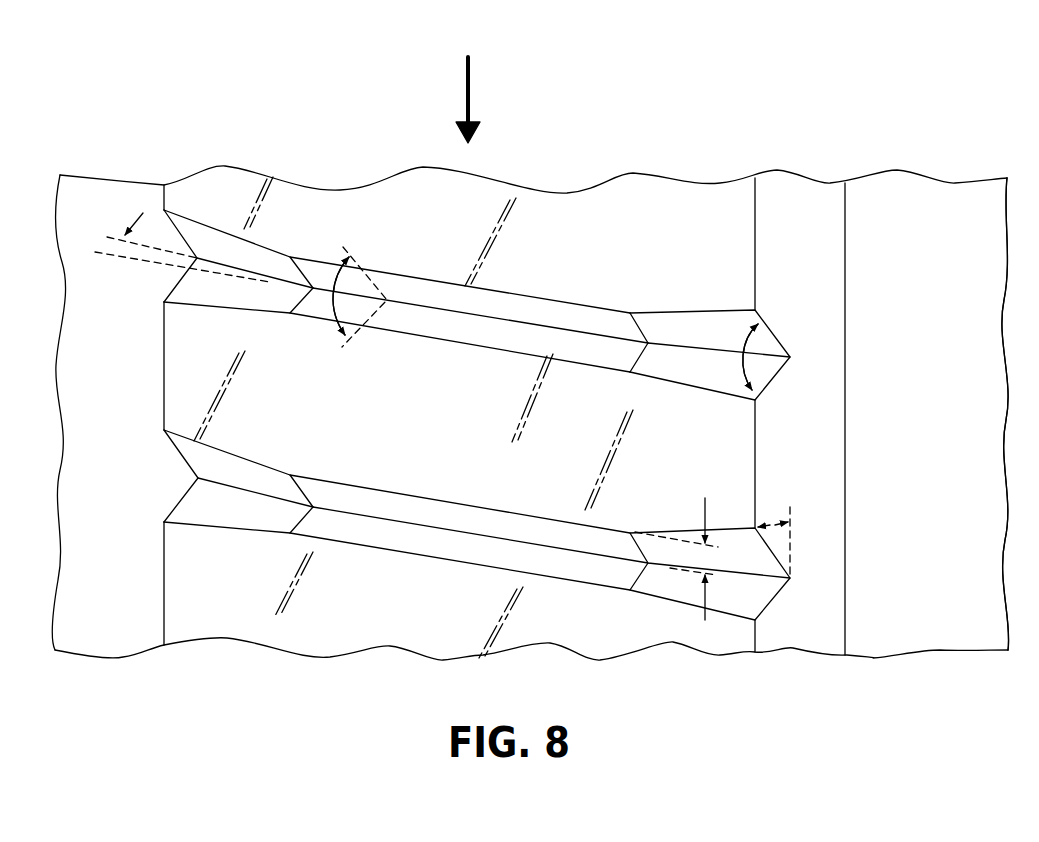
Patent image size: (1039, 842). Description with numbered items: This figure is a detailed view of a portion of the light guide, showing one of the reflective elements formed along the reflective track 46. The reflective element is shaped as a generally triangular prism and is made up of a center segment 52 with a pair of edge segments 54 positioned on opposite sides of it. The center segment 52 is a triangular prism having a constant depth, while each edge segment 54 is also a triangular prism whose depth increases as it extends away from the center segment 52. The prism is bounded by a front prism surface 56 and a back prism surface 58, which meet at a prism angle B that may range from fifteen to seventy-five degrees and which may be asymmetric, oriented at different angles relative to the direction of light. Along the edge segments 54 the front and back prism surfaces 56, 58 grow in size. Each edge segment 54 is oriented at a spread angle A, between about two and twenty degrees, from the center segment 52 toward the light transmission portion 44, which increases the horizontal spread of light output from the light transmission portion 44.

The light transmission portion 44 is at (913, 223).
The reflective track 46 is at (800, 197).
The center segment 52 is at (477, 324).
The edge segments 54 is at (218, 228).
The front prism surface 56 is at (563, 317).
The back prism surface 58 is at (615, 357).